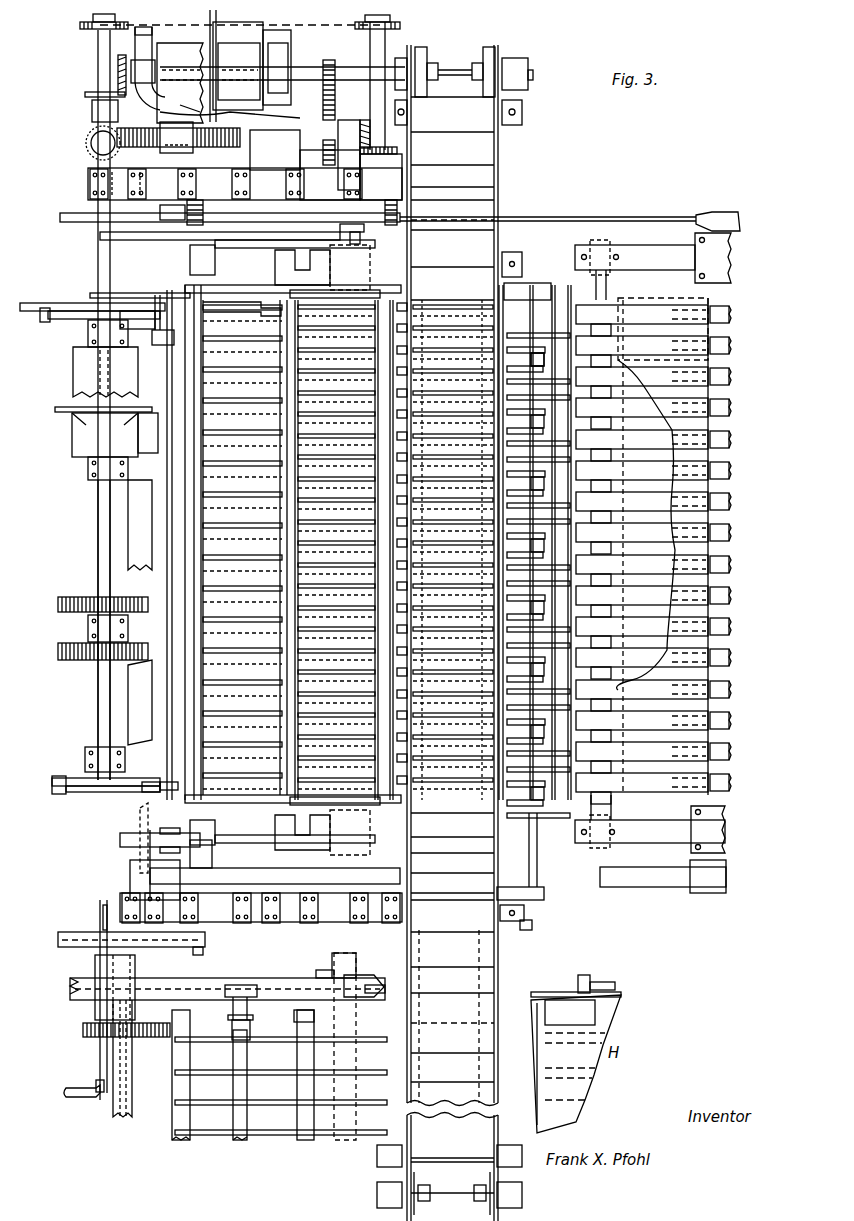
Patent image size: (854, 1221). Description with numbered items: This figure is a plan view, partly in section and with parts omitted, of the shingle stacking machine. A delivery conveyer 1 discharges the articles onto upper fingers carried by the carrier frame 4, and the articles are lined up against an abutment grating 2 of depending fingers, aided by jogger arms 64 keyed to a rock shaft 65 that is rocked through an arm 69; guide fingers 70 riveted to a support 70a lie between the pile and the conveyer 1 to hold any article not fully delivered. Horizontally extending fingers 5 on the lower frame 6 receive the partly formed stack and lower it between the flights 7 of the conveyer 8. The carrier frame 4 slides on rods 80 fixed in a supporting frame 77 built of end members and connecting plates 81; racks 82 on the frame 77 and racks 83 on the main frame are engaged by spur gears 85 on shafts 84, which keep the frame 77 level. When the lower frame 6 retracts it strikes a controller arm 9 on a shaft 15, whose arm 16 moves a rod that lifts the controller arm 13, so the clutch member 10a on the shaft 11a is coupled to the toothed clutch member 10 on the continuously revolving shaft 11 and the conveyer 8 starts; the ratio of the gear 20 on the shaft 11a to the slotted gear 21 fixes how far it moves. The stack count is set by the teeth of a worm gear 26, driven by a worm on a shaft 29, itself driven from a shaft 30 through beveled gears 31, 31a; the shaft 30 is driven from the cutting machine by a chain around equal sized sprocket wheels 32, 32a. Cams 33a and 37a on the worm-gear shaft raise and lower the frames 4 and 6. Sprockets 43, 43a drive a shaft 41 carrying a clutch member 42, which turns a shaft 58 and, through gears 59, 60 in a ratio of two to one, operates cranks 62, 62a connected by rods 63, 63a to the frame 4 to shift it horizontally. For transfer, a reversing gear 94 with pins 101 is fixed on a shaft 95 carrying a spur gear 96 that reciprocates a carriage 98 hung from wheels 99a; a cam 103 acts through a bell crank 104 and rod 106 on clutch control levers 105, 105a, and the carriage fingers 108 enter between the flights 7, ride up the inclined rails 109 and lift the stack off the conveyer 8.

The delivery conveyer 1 is at (608, 479).
The abutment grating 2 is at (430, 320).
The carrier frame 4 is at (215, 270).
The horizontally extending fingers 5 is at (448, 305).
The lower frame 6 is at (360, 272).
The cross pieces or flights 7 is at (455, 132).
The conveyer 8 is at (486, 955).
The controller arm 9 is at (175, 340).
The clutch member 10 is at (175, 45).
The complementary clutch member 10a is at (290, 36).
The shaft 11 is at (118, 72).
The shaft 11a is at (365, 72).
The controller arm 13 is at (214, 36).
The shaft 15 is at (170, 296).
The arm 16 is at (158, 108).
The gear 20 is at (328, 62).
The gear 21 is at (335, 108).
The worm gear 26 is at (236, 140).
The shaft 29 is at (270, 145).
The shaft 30 is at (376, 46).
The beveled gear 31 is at (372, 128).
The beveled gear 31a is at (400, 149).
The sprocket wheel 32 is at (348, 228).
The sprocket wheel 32a is at (702, 213).
The cam 33a is at (145, 840).
The cam 37a is at (143, 830).
The shaft 41 is at (100, 262).
The clutch member 42 is at (80, 372).
The sprocket 43 is at (400, 26).
The sprocket 43a is at (92, 28).
The shaft 58 is at (97, 547).
The gear 59 is at (90, 597).
The gear 60 is at (60, 602).
The crank 62 is at (68, 778).
The crank 62a is at (62, 318).
The rod 63 is at (86, 792).
The rod 63a is at (65, 302).
The jogger arms 64 is at (540, 378).
The rock shaft 65 is at (543, 862).
The arm 69 is at (542, 912).
The guide fingers 70 is at (572, 608).
The support 70a is at (572, 268).
The supporting frame 77 is at (262, 238).
The rods 80 is at (320, 272).
The connecting plates 81 is at (185, 588).
The racks 82 is at (195, 232).
The racks 83 is at (200, 200).
The shafts 84 is at (292, 212).
The spur gears 85 is at (206, 205).
The reversing gear 94 is at (78, 932).
The shaft 95 is at (133, 1078).
The spur gear 96 is at (163, 1022).
The reciprocating carriage 98 is at (265, 1030).
The wheels 99a is at (245, 985).
The teeth or pins 101 is at (227, 976).
The cam 103 is at (215, 925).
The bell crank 104 is at (140, 868).
The clutch control lever 105 is at (110, 1070).
The lever 105a is at (85, 1090).
The rod 106 is at (104, 900).
The fingers or grating 108 is at (330, 1128).
The rails 109 is at (368, 997).